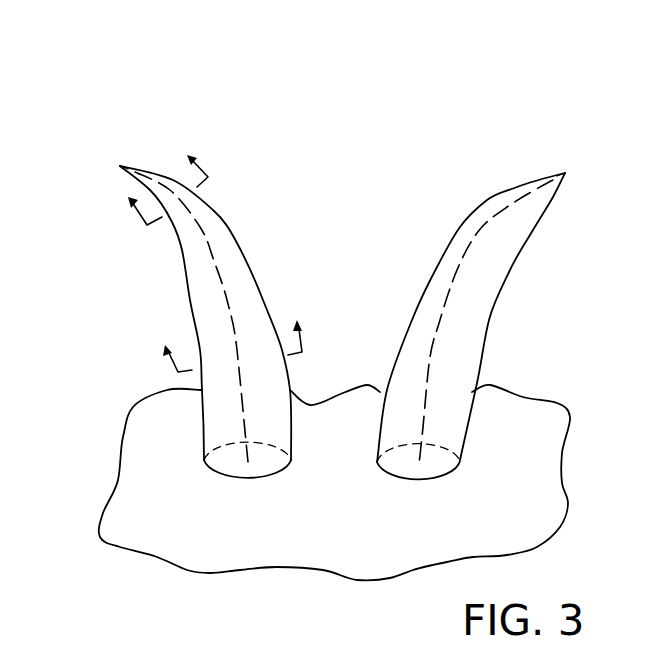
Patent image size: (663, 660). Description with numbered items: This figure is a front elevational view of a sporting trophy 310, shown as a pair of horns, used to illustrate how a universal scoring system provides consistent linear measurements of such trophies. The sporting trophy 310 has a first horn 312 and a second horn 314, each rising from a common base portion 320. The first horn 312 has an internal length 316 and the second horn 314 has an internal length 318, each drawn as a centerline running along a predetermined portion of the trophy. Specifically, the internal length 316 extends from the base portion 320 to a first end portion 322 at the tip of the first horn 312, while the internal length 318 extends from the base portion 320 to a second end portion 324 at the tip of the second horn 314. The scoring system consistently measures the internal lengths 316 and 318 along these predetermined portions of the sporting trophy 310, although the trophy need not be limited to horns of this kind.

The sporting trophy 310 is at (394, 79).
The first horn 312 is at (213, 210).
The second horn 314 is at (480, 205).
The internal length 316 is at (207, 250).
The internal length 318 is at (428, 357).
The base portion 320 is at (257, 543).
The first end portion 322 is at (119, 165).
The second end portion 324 is at (565, 173).